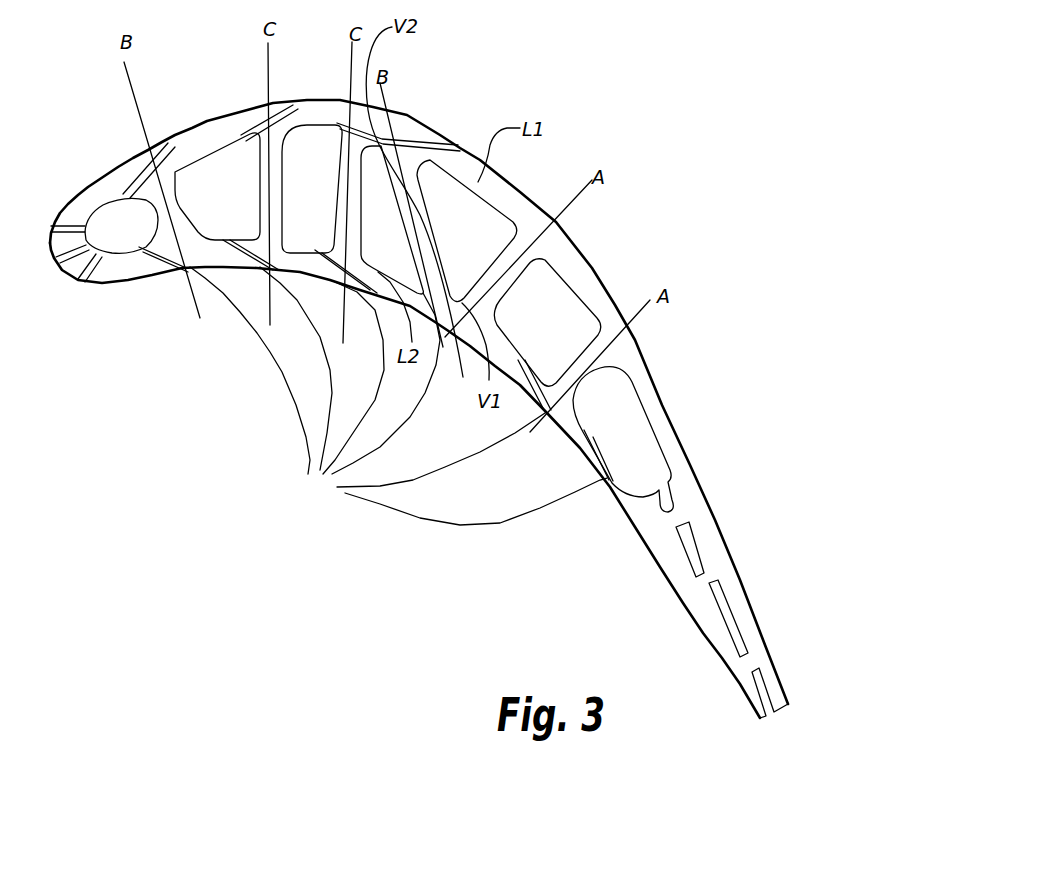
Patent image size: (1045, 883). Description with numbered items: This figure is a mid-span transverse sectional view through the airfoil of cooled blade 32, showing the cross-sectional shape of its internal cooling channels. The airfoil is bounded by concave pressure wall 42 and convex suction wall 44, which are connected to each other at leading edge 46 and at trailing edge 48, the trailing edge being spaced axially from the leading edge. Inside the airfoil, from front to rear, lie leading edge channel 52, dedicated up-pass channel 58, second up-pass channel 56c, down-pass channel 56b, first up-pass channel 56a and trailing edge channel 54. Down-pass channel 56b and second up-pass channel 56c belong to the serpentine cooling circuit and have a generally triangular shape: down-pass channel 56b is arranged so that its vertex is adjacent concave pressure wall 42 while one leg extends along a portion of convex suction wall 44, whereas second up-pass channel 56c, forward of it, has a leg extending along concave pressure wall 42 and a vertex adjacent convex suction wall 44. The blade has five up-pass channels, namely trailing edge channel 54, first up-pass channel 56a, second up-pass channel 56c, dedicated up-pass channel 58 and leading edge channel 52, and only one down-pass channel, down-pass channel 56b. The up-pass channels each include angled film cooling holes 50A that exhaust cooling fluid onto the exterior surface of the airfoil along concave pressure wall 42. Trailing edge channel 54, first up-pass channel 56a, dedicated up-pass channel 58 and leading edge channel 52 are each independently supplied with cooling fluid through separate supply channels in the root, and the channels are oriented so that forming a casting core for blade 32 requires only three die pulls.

The cooled blade 32 is at (419, 376).
The concave pressure wall 42 is at (618, 504).
The convex suction wall 44 is at (578, 246).
The leading edge 46 is at (55, 265).
The trailing edge 48 is at (775, 715).
The film cooling holes 50A is at (398, 396).
The leading edge channel 52 is at (230, 194).
The trailing edge channel 54 is at (630, 425).
The first up-pass channel 56a is at (563, 335).
The down-pass channel 56b is at (487, 244).
The second up-pass channel 56c is at (400, 247).
The dedicated up-pass channel 58 is at (317, 202).